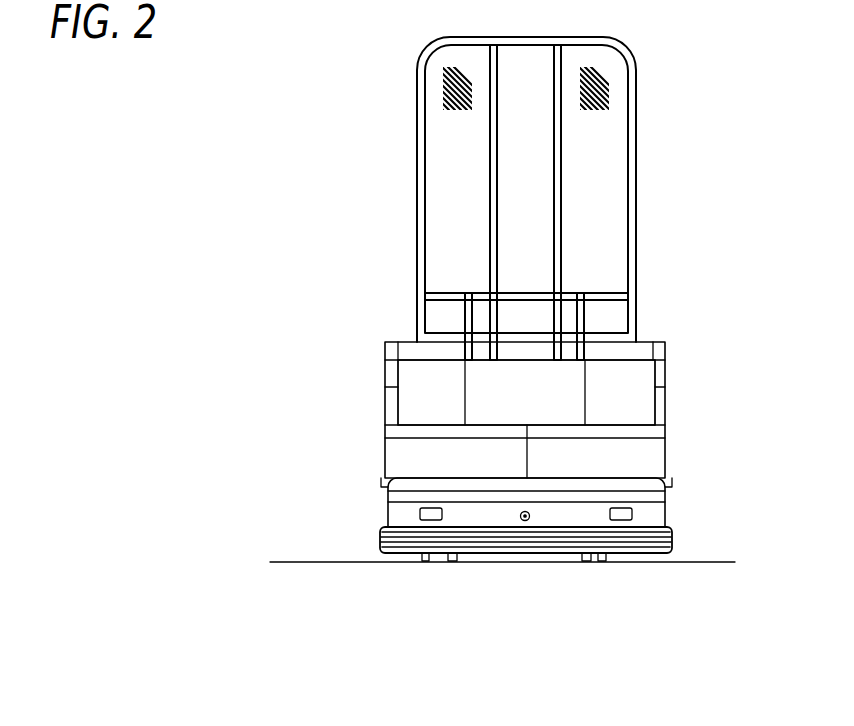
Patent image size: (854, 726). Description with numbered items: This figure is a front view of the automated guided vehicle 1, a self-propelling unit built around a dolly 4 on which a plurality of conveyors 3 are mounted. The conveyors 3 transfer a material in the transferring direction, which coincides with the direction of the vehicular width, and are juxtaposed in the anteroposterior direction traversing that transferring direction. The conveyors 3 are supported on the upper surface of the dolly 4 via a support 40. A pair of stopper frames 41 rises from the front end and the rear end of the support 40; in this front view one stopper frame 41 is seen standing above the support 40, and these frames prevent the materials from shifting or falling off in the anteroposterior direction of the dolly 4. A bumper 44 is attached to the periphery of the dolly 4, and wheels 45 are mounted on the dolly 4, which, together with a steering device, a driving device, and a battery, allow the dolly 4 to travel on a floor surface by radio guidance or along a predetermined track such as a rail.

The automated guided vehicle 1 is at (366, 64).
The conveyors 3 is at (645, 345).
The dolly 4 is at (667, 515).
The support 40 is at (385, 372).
The stopper frames 41 is at (636, 143).
The bumper 44 is at (380, 530).
The wheels 45 is at (425, 562).